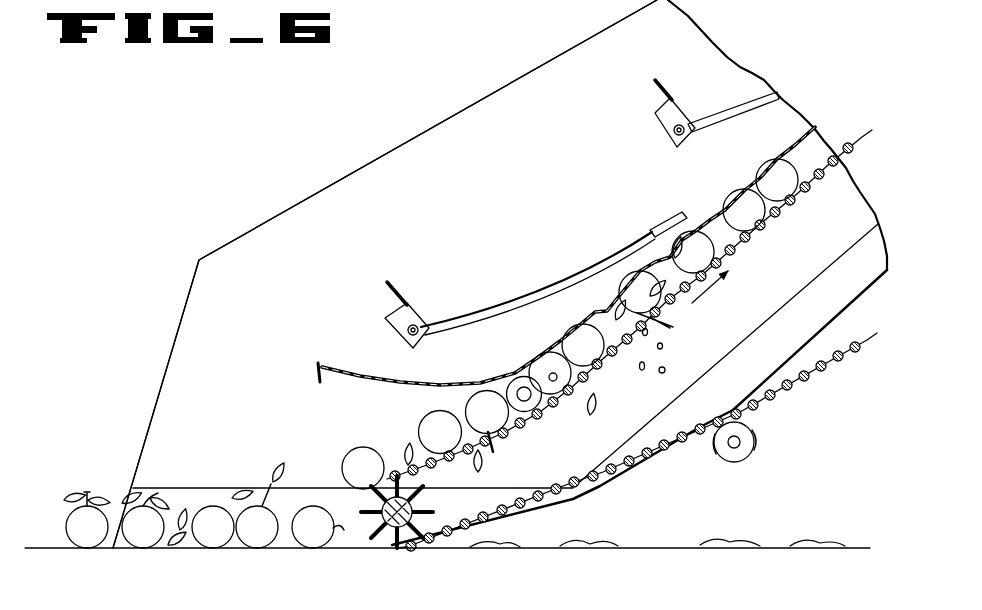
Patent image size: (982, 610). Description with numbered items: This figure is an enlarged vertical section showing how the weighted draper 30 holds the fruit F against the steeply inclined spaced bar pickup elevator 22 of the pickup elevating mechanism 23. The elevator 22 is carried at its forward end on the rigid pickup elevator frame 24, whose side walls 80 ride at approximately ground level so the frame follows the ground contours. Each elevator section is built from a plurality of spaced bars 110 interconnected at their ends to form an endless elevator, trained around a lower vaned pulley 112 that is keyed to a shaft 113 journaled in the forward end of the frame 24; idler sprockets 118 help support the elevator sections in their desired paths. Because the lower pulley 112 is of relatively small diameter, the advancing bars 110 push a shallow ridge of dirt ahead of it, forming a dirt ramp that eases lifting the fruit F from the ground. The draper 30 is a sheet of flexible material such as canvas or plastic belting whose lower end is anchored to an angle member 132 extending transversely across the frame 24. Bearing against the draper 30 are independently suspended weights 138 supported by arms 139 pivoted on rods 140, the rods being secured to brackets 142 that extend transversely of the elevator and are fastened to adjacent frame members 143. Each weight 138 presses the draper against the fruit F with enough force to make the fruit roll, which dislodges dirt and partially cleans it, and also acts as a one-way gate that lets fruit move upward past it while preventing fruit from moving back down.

The spaced bar pickup elevator 22 is at (786, 406).
The pickup elevating mechanism 23 is at (422, 182).
The pickup elevator frame 24 is at (178, 309).
The weighted draper 30 is at (392, 373).
The side walls 80 is at (252, 328).
The spaced bars 110 is at (521, 428).
The lower vaned pulley 112 is at (402, 530).
The shaft 113 is at (410, 508).
The idler sprockets 118 is at (742, 458).
The angle member 132 is at (316, 366).
The independently suspended weights 138 is at (657, 227).
The arms 139 is at (720, 113).
The rods 140 is at (675, 137).
The brackets 142 is at (660, 118).
The frame members 143 is at (657, 90).
The fruit F is at (432, 424).